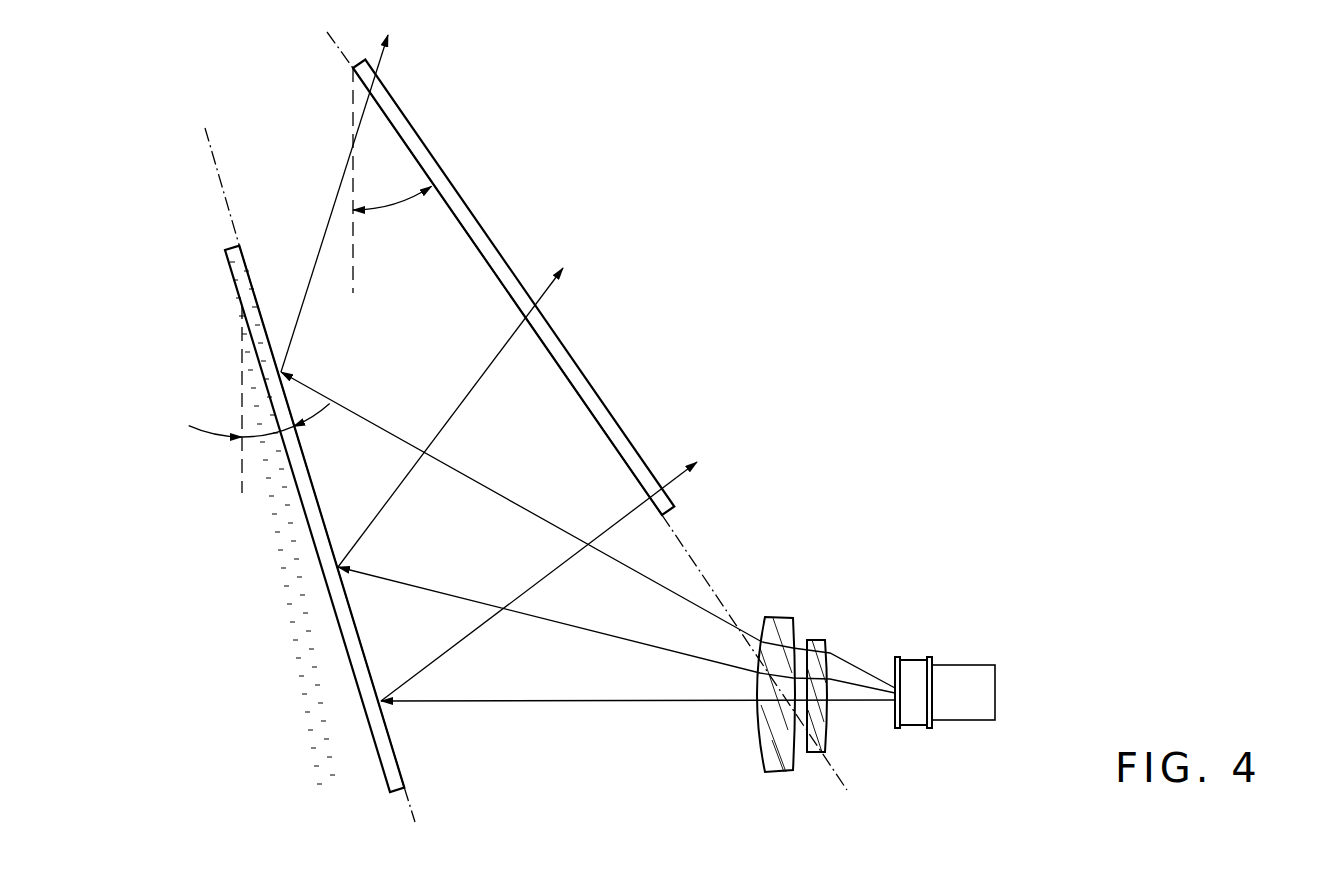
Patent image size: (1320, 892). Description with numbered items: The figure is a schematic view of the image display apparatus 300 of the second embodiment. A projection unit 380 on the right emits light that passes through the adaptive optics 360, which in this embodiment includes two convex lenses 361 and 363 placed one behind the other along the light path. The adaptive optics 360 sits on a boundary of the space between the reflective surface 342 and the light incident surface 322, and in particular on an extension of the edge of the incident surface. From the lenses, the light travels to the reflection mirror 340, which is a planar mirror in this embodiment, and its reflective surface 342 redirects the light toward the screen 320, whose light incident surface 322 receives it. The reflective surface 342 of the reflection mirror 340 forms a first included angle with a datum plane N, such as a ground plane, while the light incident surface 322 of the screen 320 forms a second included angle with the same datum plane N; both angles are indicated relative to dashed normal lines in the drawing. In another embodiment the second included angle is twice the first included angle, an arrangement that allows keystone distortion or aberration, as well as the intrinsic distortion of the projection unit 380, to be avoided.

The image display apparatus 300 is at (963, 205).
The screen 320 is at (672, 507).
The light incident surface 322 is at (562, 373).
The reflection mirror 340 is at (400, 793).
The reflective surface 342 is at (247, 253).
The adaptive optics 360 is at (848, 528).
The convex lens 361 is at (818, 640).
The convex lens 363 is at (780, 617).
The projection unit 380 is at (962, 677).